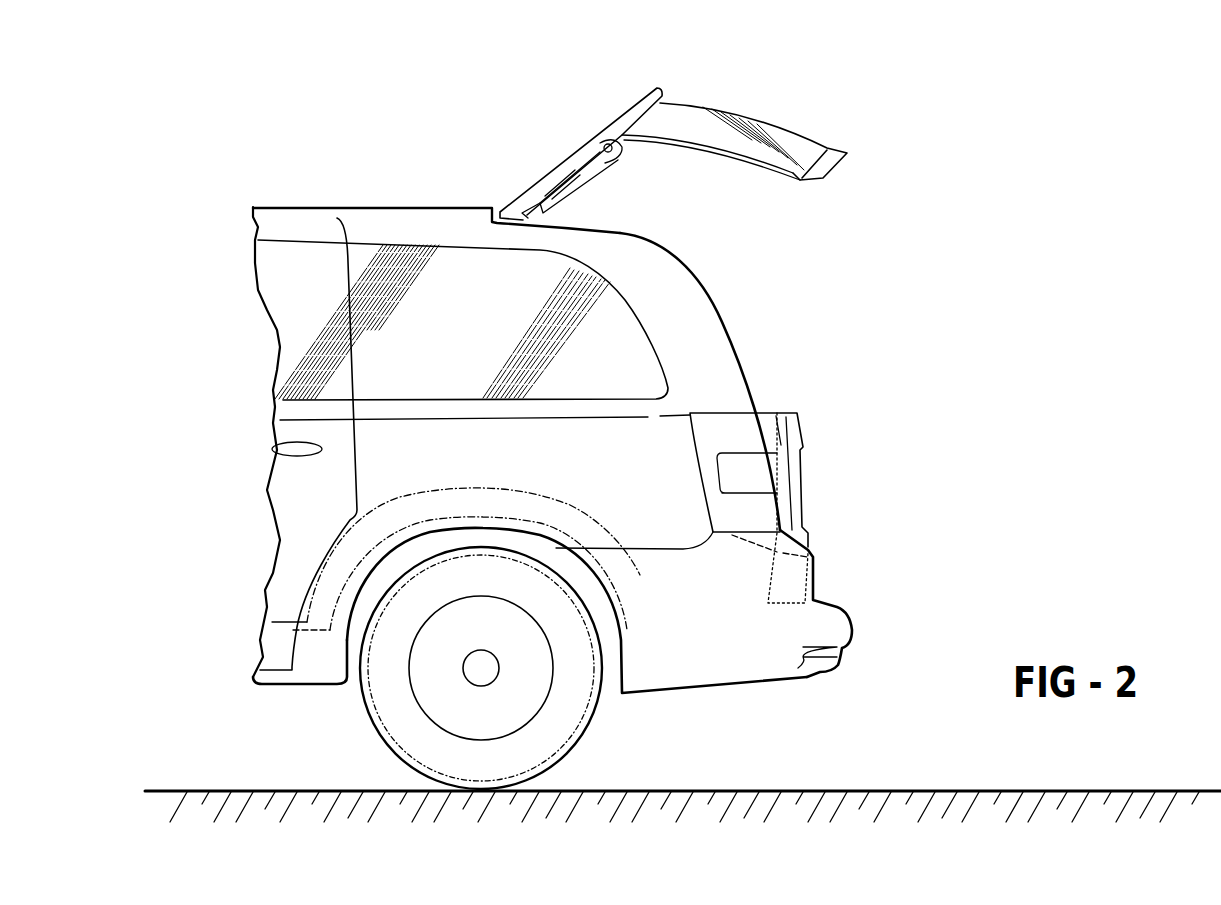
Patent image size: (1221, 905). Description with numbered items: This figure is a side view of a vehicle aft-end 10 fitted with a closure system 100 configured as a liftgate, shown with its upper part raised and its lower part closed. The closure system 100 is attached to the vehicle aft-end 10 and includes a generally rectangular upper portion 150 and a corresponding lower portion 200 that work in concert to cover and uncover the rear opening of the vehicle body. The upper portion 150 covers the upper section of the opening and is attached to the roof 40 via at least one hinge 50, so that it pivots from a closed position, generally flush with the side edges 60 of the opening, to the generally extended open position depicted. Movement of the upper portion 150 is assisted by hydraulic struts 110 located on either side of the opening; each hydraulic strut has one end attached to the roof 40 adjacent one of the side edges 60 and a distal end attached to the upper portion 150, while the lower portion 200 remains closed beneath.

The vehicle aft-end 10 is at (279, 712).
The roof 40 is at (440, 207).
The hinge 50 is at (522, 213).
The side edges 60 is at (717, 312).
The closure system 100 is at (845, 360).
The hydraulic struts 110 is at (577, 181).
The upper portion 150 is at (627, 106).
The lower portion 200 is at (803, 502).